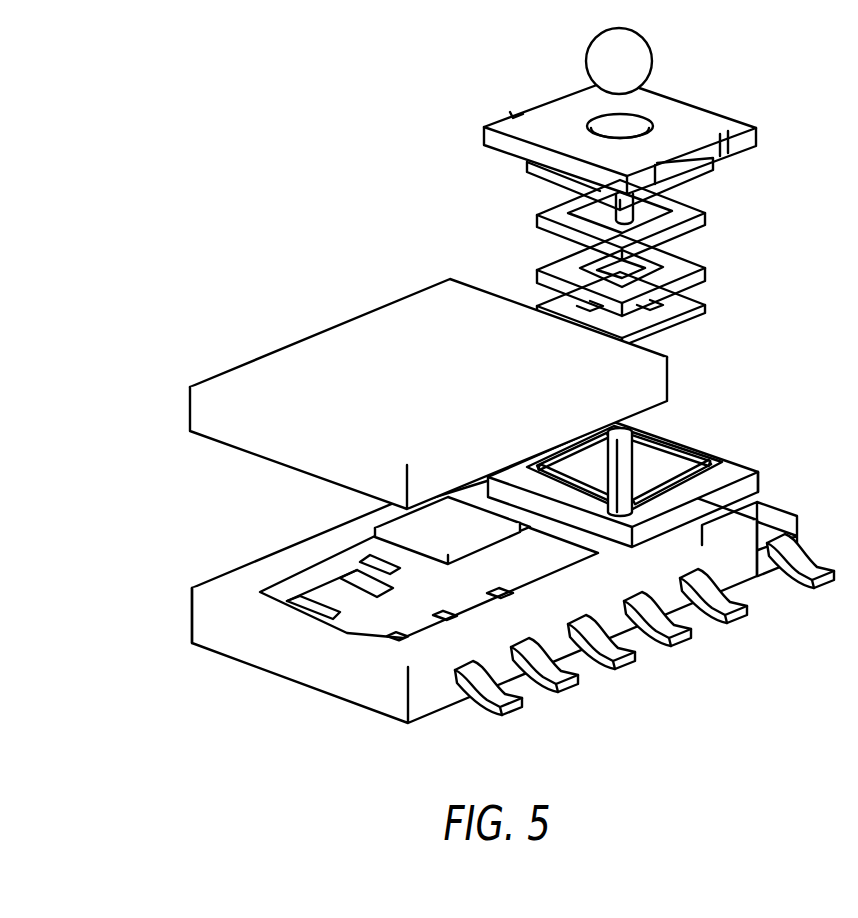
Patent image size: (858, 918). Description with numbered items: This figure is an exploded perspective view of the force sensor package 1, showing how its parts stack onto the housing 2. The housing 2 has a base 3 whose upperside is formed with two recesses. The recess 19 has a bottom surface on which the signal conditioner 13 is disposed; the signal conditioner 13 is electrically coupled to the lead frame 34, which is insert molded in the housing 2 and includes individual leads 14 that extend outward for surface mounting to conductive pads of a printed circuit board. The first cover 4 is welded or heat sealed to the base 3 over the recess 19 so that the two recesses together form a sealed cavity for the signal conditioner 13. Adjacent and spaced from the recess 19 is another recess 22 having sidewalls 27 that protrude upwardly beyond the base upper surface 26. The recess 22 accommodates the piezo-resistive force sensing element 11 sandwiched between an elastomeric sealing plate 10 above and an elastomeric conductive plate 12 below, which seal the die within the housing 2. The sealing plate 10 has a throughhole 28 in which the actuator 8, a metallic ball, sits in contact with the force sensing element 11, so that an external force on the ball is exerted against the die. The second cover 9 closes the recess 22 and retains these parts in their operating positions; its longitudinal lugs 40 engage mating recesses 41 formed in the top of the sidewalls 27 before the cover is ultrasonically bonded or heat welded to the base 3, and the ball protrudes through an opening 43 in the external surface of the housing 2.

The force sensor package 1 is at (212, 161).
The housing 2 is at (434, 600).
The base 3 is at (382, 690).
The first cover 4 is at (392, 358).
The actuator 8 is at (648, 36).
The second cover 9 is at (745, 113).
The elastomeric sealing plate 10 is at (690, 208).
The force sensing element 11 is at (690, 262).
The elastomeric conductive plate 12 is at (707, 308).
The signal conditioner 13 is at (408, 525).
The leads 14 is at (574, 692).
The recess 19 is at (373, 610).
The recess 22 is at (667, 463).
The base upper surface 26 is at (228, 586).
The sidewalls 27 is at (750, 460).
The throughhole 28 is at (605, 222).
The lead frame 34 is at (674, 661).
The longitudinal lugs 40 is at (547, 181).
The mating recesses 41 is at (700, 452).
The opening 43 is at (626, 128).